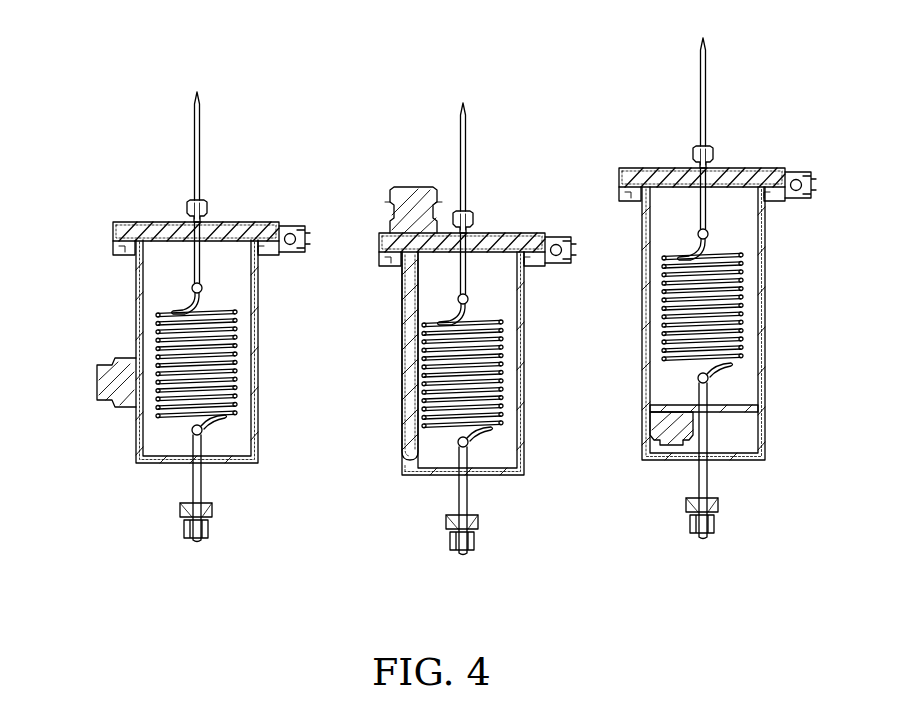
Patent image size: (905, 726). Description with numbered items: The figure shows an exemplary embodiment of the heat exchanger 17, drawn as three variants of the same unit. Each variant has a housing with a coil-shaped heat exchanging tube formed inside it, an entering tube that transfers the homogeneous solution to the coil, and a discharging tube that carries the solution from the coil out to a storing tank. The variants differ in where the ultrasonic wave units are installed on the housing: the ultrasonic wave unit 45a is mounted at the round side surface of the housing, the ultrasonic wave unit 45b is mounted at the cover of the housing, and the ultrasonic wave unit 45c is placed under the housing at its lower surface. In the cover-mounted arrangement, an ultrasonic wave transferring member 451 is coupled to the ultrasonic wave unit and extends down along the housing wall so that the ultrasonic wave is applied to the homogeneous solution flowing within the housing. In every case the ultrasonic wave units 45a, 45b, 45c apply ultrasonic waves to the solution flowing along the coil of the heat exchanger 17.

The heat exchanger 17 is at (125, 437).
The ultrasonic wave unit 45a is at (100, 370).
The ultrasonic wave unit 45b is at (413, 187).
The ultrasonic wave unit 45c is at (645, 405).
The ultrasonic wave transferring member 451 is at (403, 330).